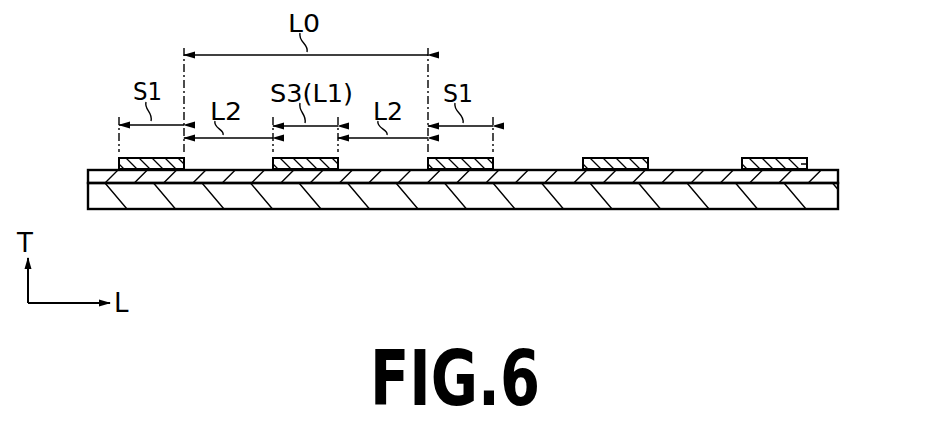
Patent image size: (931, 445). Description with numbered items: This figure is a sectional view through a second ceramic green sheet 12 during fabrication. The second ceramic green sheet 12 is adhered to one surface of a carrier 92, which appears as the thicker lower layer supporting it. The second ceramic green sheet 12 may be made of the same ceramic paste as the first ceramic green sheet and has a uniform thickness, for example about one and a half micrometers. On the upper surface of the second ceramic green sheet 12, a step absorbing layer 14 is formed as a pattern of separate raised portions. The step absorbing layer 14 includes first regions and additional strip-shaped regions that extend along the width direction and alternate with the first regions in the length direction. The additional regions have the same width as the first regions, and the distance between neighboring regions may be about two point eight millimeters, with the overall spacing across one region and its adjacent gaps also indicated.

The second ceramic green sheet 12 is at (92, 176).
The carrier 92 is at (92, 194).
The step absorbing layer 14 is at (770, 157).